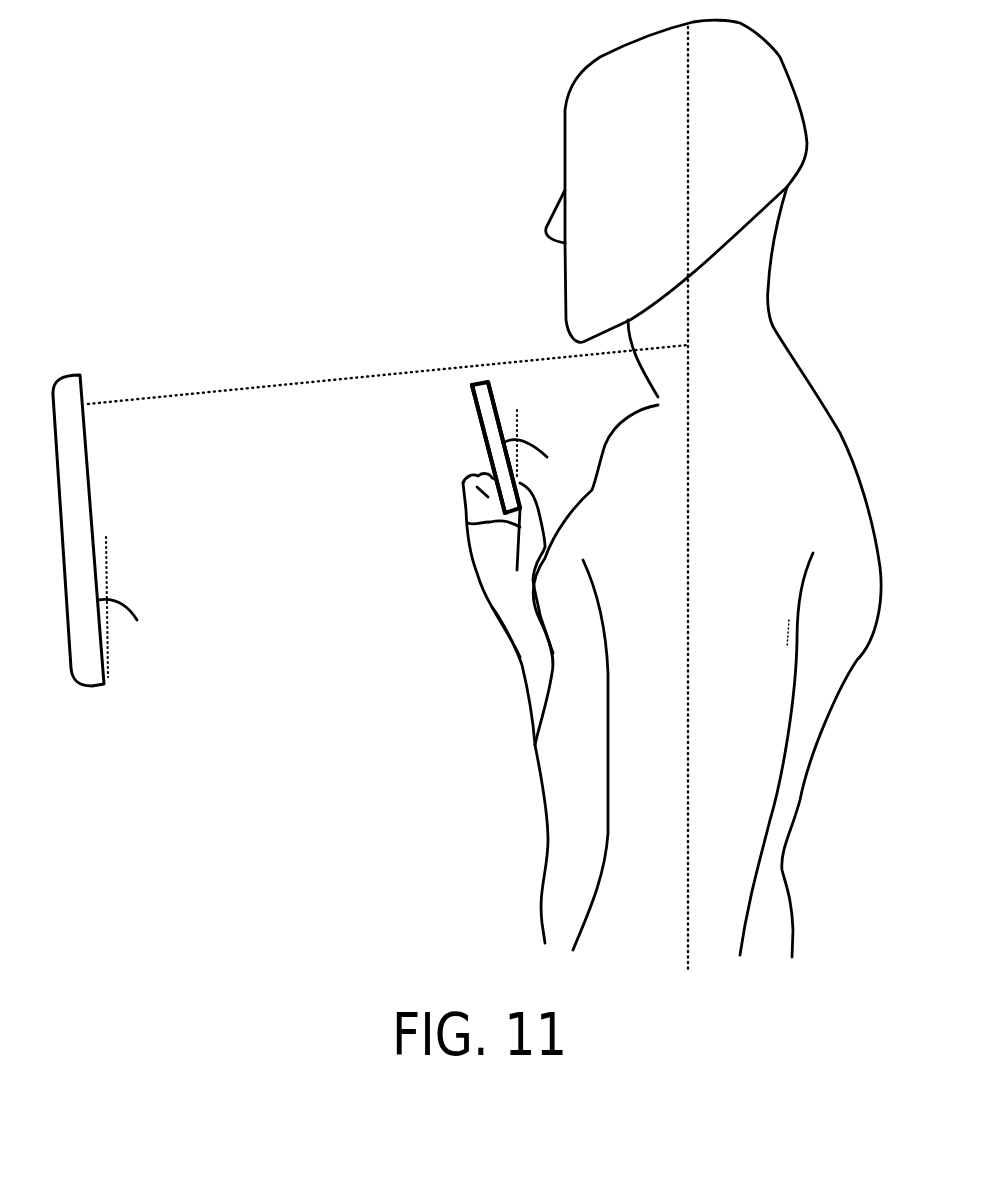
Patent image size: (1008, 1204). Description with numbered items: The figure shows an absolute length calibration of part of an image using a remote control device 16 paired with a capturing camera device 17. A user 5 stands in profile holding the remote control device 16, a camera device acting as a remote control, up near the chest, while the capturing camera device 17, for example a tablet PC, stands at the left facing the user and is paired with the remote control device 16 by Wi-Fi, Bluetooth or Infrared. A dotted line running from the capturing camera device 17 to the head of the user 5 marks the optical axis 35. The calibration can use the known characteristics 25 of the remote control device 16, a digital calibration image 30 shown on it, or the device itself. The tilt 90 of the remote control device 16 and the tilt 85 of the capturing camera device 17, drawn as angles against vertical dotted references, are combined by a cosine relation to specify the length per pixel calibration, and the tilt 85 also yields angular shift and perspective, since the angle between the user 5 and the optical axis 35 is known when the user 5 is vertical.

The user 5 is at (778, 276).
The remote control device 16 is at (462, 403).
The capturing camera device 17 is at (85, 364).
The characteristics of the remote control device 25 is at (471, 434).
The digital calibration image 30 is at (470, 459).
The optical axis 35 is at (366, 364).
The tilt of the capturing camera device 85 is at (127, 596).
The tilt of the remote control device 90 is at (544, 434).